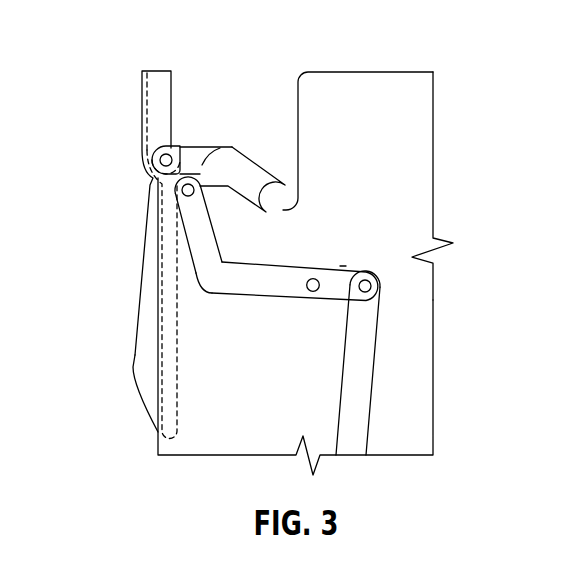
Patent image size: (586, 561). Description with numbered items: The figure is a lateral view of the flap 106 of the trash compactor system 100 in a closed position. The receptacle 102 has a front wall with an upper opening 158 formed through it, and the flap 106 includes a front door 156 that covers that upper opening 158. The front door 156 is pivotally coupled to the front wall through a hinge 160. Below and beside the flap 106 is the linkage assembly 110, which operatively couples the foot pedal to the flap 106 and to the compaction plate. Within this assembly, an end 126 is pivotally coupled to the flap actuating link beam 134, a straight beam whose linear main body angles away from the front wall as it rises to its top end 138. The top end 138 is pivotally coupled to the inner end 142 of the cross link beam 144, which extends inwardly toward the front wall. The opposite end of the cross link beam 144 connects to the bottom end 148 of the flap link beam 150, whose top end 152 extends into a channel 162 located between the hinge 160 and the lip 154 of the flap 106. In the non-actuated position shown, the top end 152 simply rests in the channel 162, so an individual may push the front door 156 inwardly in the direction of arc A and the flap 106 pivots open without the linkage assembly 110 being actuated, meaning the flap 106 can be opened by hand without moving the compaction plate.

The trash compactor system 100 is at (141, 47).
The receptacle 102 is at (407, 95).
The flap 106 is at (142, 273).
The linkage assembly 110 is at (392, 376).
The end 126 is at (585, 4).
The flap actuating link beam 134 is at (353, 410).
The top end 138 is at (370, 296).
The inner end 142 is at (343, 264).
The cross link beam 144 is at (277, 286).
The bottom end 148 is at (210, 286).
The flap link beam 150 is at (208, 243).
The top end 152 is at (204, 213).
The lip 154 is at (248, 184).
The front door 156 is at (137, 362).
The upper opening 158 is at (163, 378).
The hinge 160 is at (168, 153).
The channel 162 is at (195, 150).
The arc A is at (112, 323).